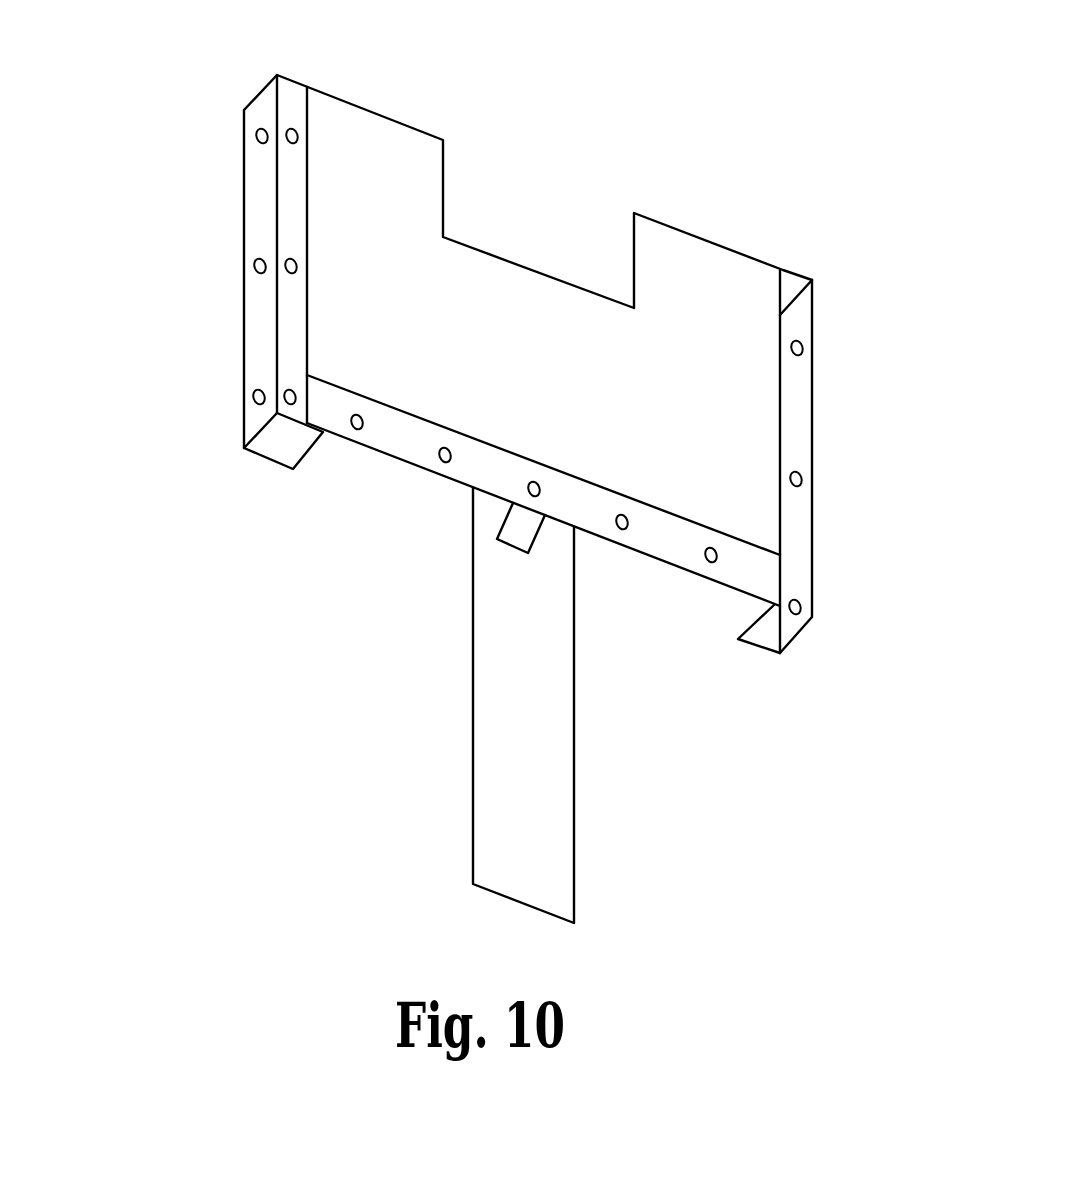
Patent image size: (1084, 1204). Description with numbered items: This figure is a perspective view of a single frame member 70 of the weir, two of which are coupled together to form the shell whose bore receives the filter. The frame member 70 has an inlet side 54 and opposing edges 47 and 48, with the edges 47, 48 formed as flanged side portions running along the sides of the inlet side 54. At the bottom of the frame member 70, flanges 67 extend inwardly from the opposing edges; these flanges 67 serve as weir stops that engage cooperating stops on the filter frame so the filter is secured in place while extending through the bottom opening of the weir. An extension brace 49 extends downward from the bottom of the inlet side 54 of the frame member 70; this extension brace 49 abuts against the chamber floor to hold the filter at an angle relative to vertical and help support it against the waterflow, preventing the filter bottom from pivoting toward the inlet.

The frame member 70 is at (578, 123).
The edge 47 is at (260, 203).
The edge 48 is at (798, 397).
The extension brace 49 is at (573, 809).
The inlet side 54 is at (438, 402).
The flange 67 is at (252, 453).